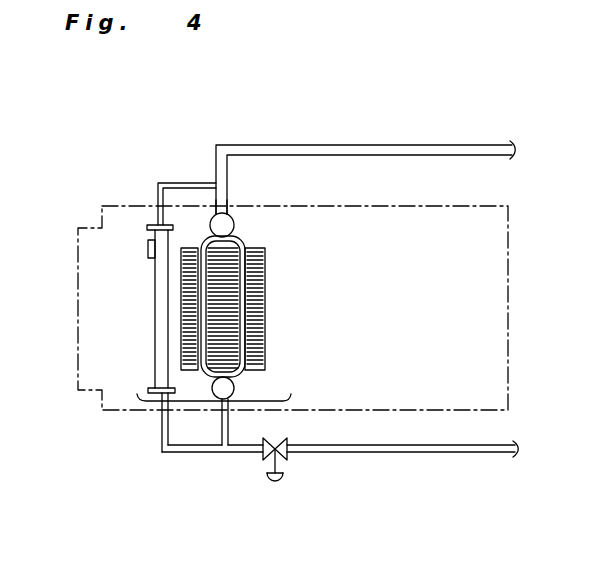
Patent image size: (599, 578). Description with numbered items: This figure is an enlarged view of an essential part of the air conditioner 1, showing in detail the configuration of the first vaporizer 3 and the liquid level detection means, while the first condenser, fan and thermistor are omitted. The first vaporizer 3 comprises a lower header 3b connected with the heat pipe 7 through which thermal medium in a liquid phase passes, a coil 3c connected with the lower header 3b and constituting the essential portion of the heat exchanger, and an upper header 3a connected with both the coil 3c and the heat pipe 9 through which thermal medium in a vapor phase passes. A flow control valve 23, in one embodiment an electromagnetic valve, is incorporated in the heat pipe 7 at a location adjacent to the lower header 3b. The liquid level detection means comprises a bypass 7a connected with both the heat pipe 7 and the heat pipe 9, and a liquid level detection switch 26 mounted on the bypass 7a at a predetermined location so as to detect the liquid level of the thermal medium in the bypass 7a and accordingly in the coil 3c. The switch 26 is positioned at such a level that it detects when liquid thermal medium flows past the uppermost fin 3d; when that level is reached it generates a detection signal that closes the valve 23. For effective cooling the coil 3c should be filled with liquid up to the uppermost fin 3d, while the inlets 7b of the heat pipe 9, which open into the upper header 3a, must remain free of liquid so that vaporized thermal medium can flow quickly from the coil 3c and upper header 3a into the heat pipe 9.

The air conditioner 1 is at (492, 206).
The first vaporizer 3 is at (272, 274).
The upper header 3a is at (234, 225).
The lower header 3b is at (234, 390).
The coil 3c is at (257, 316).
The uppermost fin 3d is at (181, 245).
The heat pipe 7 is at (441, 453).
The bypass 7a is at (162, 330).
The inlets 7b is at (228, 212).
The heat pipe 9 is at (348, 145).
The flow control valve 23 is at (278, 479).
The liquid level detection switch 26 is at (147, 246).